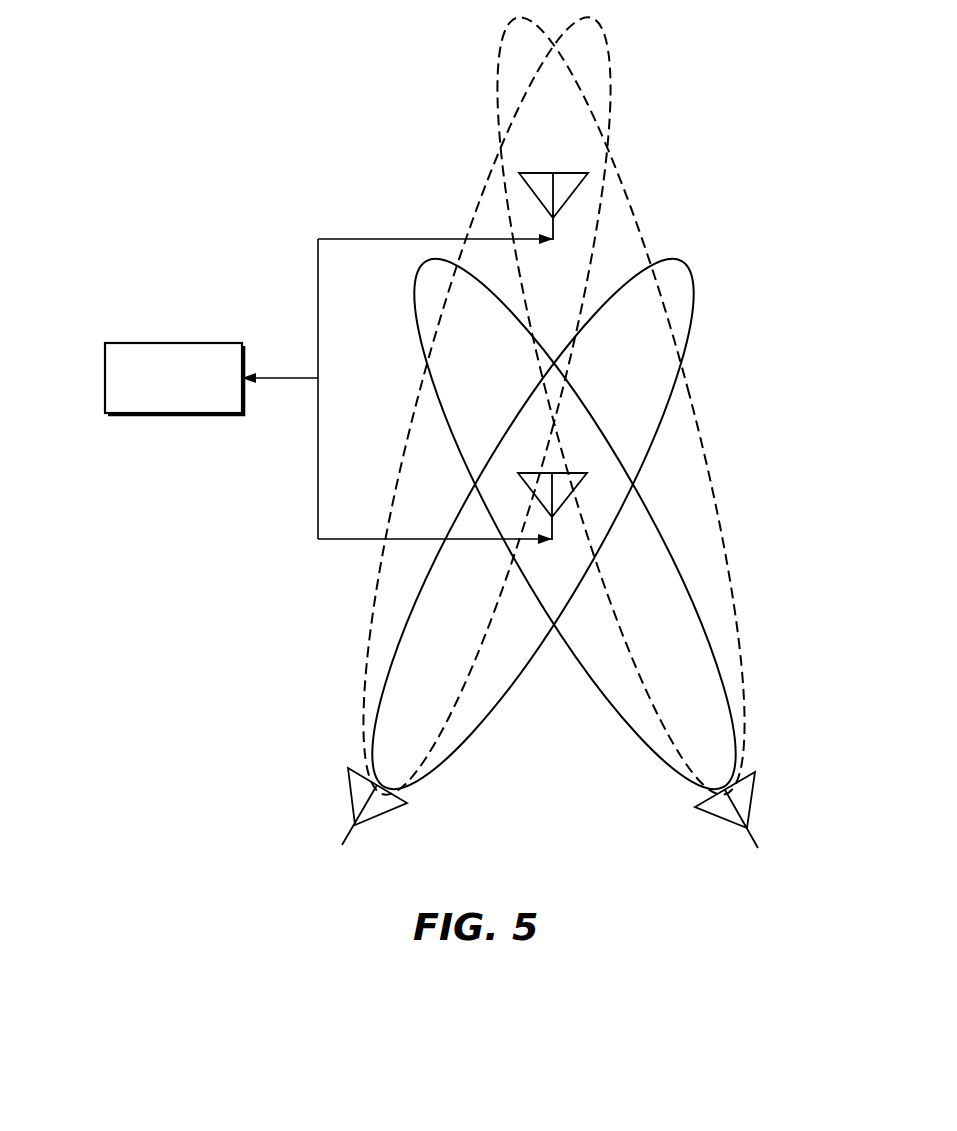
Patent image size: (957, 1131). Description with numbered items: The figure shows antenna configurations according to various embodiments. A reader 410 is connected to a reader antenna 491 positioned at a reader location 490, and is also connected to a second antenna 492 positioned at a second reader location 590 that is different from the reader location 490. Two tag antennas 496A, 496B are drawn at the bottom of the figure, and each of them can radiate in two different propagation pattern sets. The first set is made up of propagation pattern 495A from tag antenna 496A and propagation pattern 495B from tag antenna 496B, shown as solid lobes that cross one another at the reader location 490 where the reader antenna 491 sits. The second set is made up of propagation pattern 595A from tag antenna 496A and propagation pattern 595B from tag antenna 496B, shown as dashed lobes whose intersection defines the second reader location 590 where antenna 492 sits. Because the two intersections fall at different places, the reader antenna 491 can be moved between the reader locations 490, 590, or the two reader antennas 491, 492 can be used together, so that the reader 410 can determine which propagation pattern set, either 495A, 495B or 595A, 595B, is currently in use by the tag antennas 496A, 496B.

The reader 410 is at (107, 356).
The reader location 490 is at (573, 524).
The reader antenna 491 is at (554, 519).
The antenna 492 is at (544, 173).
The propagation pattern 495A is at (428, 767).
The propagation pattern 495B is at (682, 769).
The tag antenna 496A is at (349, 800).
The tag antenna 496B is at (752, 800).
The second reader location 590 is at (559, 406).
The propagation pattern 595A is at (376, 580).
The propagation pattern 595B is at (733, 580).